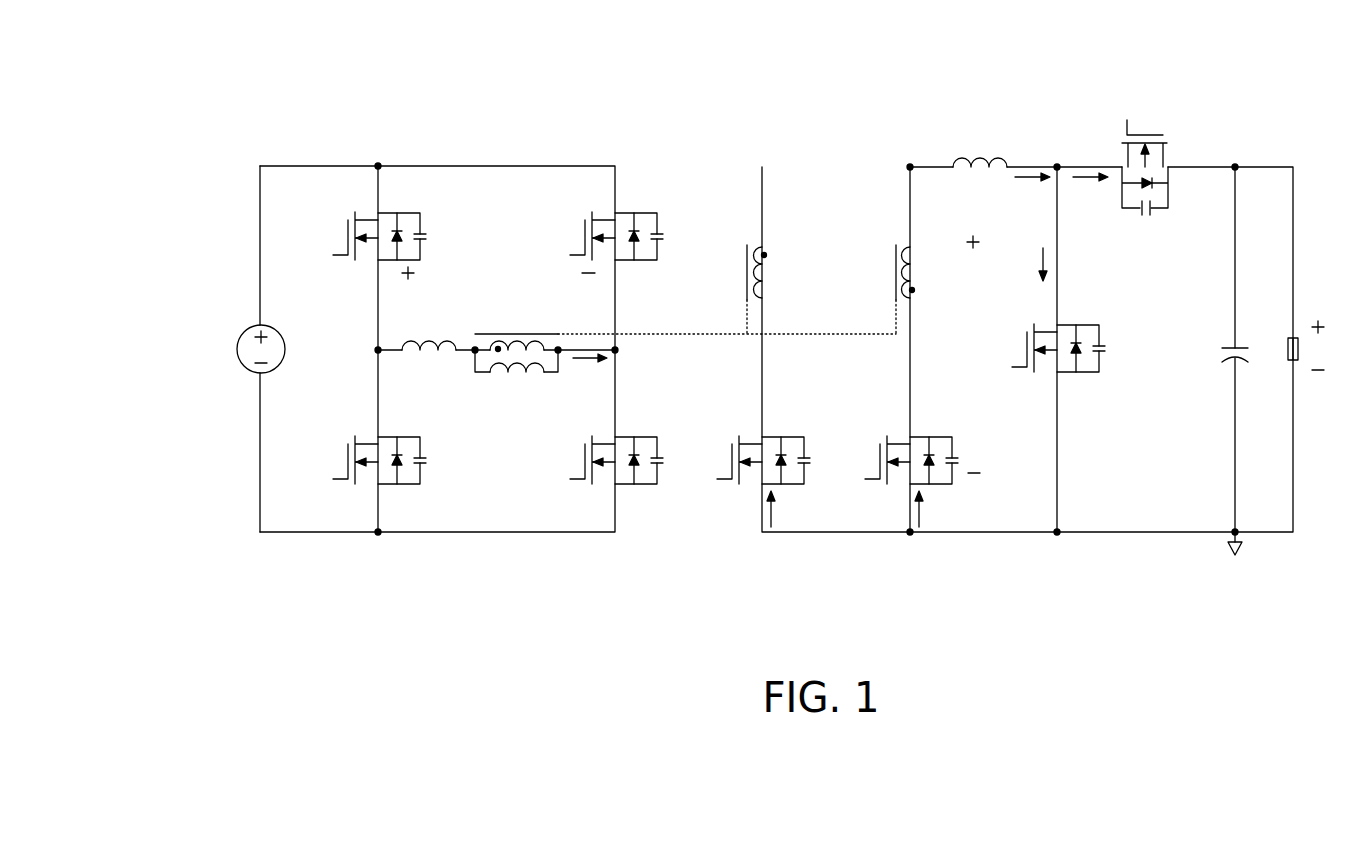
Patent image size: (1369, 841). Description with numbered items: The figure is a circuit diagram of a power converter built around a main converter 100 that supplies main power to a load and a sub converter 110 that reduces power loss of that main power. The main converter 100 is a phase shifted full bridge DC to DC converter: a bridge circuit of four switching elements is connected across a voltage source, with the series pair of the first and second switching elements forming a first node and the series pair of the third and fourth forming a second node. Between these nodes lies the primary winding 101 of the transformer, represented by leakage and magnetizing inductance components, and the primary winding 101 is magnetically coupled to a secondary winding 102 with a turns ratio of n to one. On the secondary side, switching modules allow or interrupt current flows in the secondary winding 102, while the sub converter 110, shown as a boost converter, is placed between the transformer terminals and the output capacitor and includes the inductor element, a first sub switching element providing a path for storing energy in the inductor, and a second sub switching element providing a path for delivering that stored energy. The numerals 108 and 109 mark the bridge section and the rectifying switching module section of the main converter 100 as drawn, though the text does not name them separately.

The main converter 100 is at (243, 69).
The primary winding 101 is at (407, 401).
The secondary winding 102 is at (757, 156).
The full-bridge inverter 108 is at (497, 551).
The synchronous rectifier 109 is at (845, 551).
The sub converter 110 is at (903, 116).